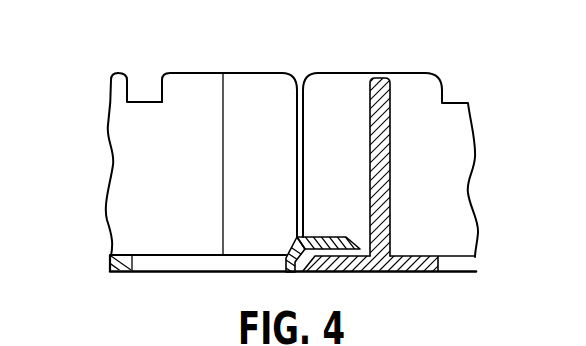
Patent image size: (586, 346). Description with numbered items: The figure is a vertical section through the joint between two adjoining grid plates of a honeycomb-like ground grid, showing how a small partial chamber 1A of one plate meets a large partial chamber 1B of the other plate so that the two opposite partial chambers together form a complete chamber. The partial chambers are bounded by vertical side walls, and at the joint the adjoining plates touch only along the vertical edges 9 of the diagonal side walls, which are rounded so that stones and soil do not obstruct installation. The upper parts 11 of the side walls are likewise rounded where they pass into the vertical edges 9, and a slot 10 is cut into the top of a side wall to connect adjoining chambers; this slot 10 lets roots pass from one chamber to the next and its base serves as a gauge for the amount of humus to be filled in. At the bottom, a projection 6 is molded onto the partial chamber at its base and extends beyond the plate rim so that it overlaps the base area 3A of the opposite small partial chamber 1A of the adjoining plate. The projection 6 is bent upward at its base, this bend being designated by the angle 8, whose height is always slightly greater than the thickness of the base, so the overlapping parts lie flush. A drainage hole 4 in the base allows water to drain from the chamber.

The small partial chamber 1A is at (348, 97).
The large partial chamber 1B is at (133, 162).
The base area 3A is at (355, 273).
The drainage hole 4 is at (180, 262).
The projection 6 is at (330, 236).
The angle 8 is at (298, 271).
The vertical edges 9 is at (297, 108).
The slots 10 is at (147, 82).
The upper parts 11 is at (207, 72).